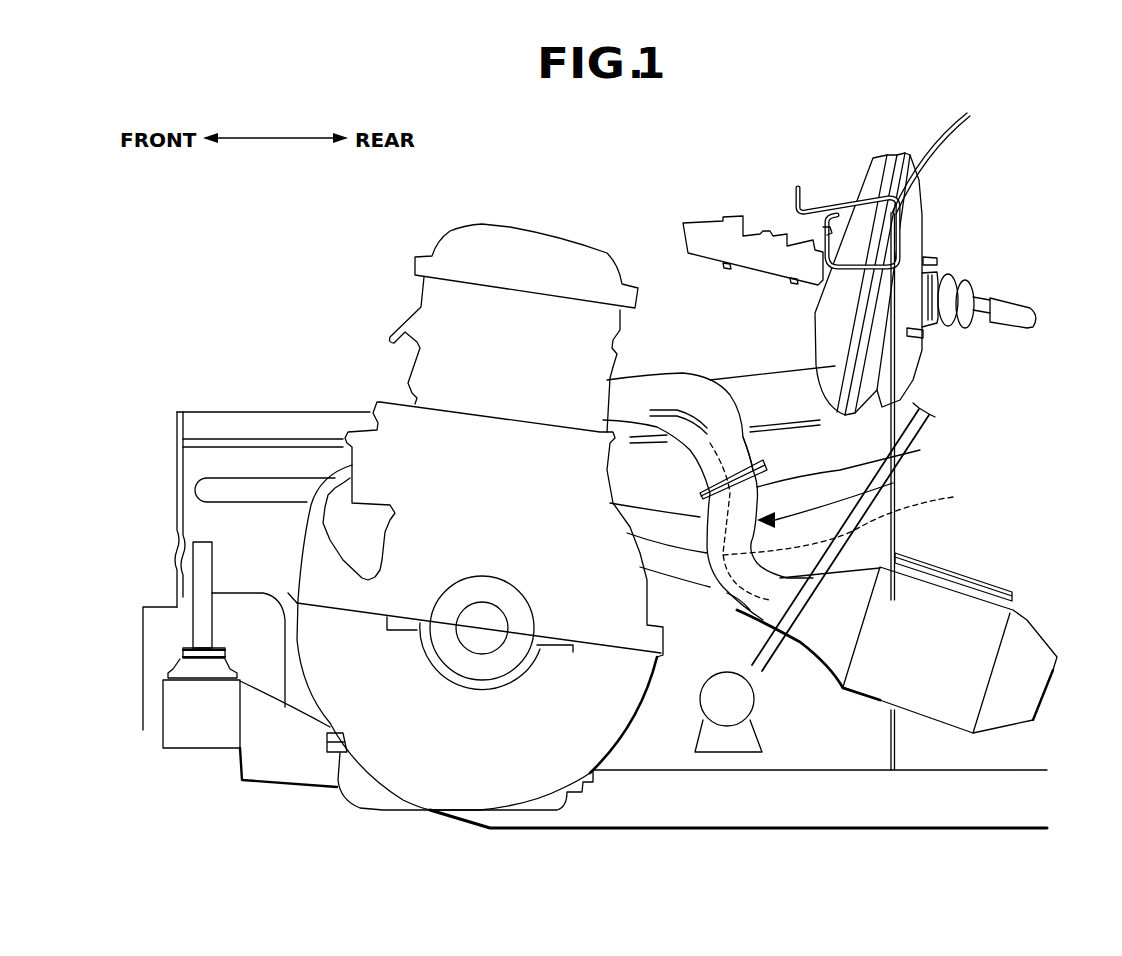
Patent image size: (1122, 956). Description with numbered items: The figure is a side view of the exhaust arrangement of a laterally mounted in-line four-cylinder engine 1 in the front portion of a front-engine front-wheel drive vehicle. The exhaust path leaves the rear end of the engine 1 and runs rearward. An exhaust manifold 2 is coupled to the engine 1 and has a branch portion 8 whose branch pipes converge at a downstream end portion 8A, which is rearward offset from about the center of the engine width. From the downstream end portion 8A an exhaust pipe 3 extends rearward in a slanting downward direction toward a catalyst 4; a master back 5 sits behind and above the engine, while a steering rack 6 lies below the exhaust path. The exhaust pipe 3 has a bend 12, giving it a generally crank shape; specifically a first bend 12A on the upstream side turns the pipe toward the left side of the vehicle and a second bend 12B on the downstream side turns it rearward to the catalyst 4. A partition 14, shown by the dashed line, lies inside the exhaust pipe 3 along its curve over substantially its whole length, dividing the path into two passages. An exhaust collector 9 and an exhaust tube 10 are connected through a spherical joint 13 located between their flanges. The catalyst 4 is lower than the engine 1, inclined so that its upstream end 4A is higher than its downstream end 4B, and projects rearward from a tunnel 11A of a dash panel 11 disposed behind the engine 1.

The engine 1 is at (384, 300).
The exhaust manifold 2 is at (688, 353).
The exhaust pipe 3 is at (893, 483).
The catalyst 4 is at (983, 637).
The upstream end 4A is at (767, 607).
The downstream end 4B is at (1047, 707).
The master back 5 is at (862, 178).
The steering rack 6 is at (723, 708).
The branch portion 8 is at (672, 393).
The downstream end portion 8A is at (713, 440).
The exhaust collector 9 is at (755, 450).
The exhaust tube 10 is at (760, 607).
The dash panel 11 is at (985, 580).
The tunnel 11A is at (893, 720).
The bend 12 is at (810, 643).
The first bend 12A is at (903, 440).
The second bend 12B is at (727, 593).
The spherical joint 13 is at (700, 490).
The partition 14 is at (953, 497).